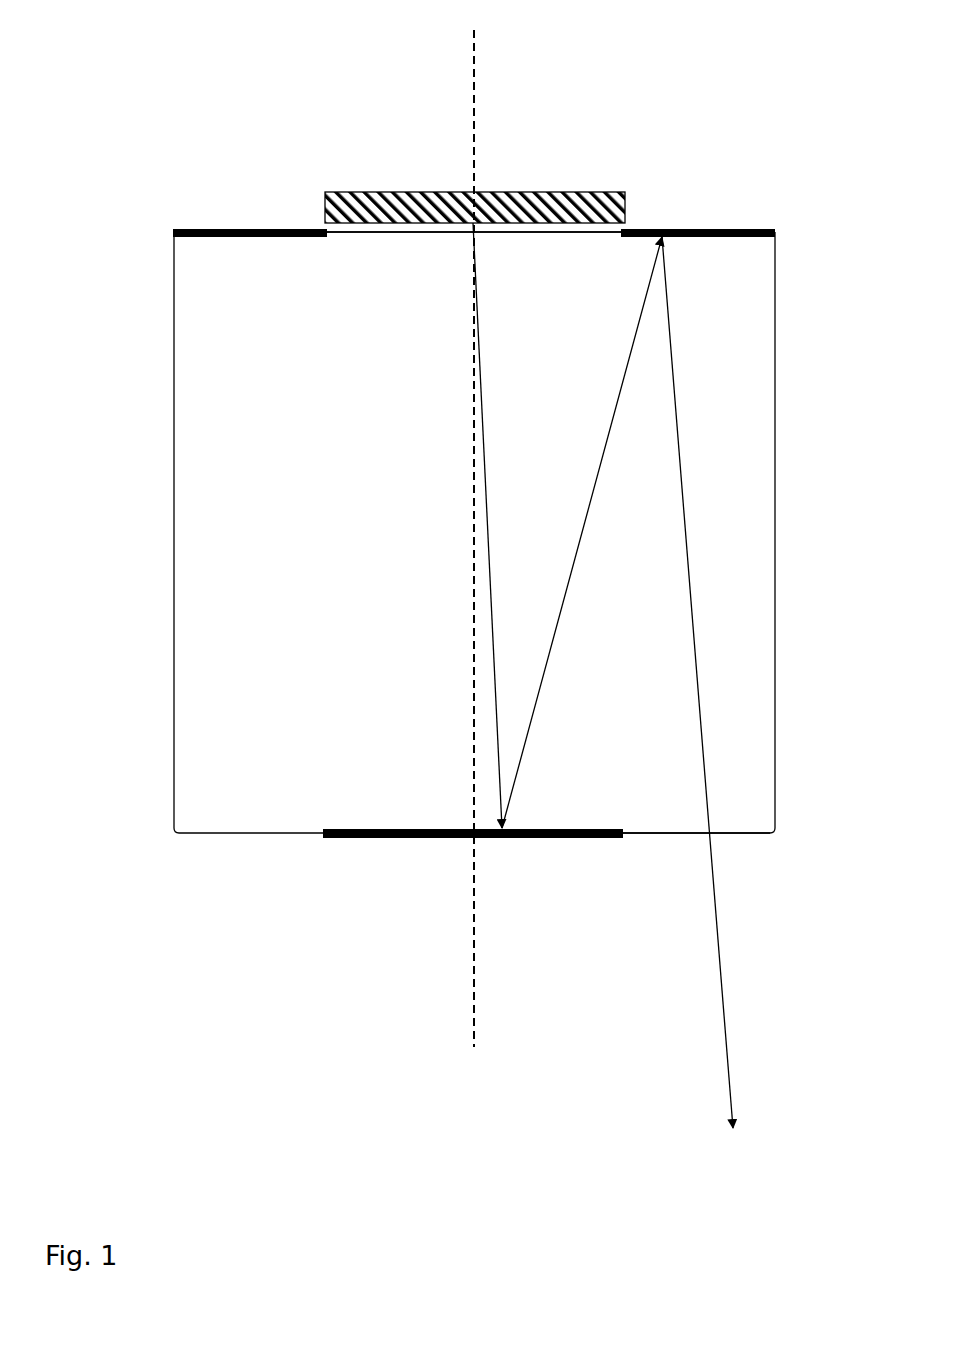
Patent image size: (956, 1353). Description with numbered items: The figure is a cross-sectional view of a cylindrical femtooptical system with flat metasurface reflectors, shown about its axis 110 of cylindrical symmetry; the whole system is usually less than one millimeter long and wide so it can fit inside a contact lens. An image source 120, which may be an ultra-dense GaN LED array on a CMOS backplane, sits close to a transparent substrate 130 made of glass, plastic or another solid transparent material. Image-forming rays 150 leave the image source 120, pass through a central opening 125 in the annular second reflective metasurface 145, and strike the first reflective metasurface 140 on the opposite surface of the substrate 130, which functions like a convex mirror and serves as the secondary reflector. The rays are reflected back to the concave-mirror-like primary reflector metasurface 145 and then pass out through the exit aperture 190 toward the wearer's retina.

The axis of cylindrical symmetry 110 is at (473, 975).
The image source 120 is at (415, 190).
The central opening 125 is at (540, 228).
The transparent substrate 130 is at (384, 482).
The first reflective optical metasurface 140 is at (351, 829).
The second reflective optical metasurface 145 is at (739, 145).
The image-forming rays 150 is at (642, 698).
The exit aperture 190 is at (737, 833).